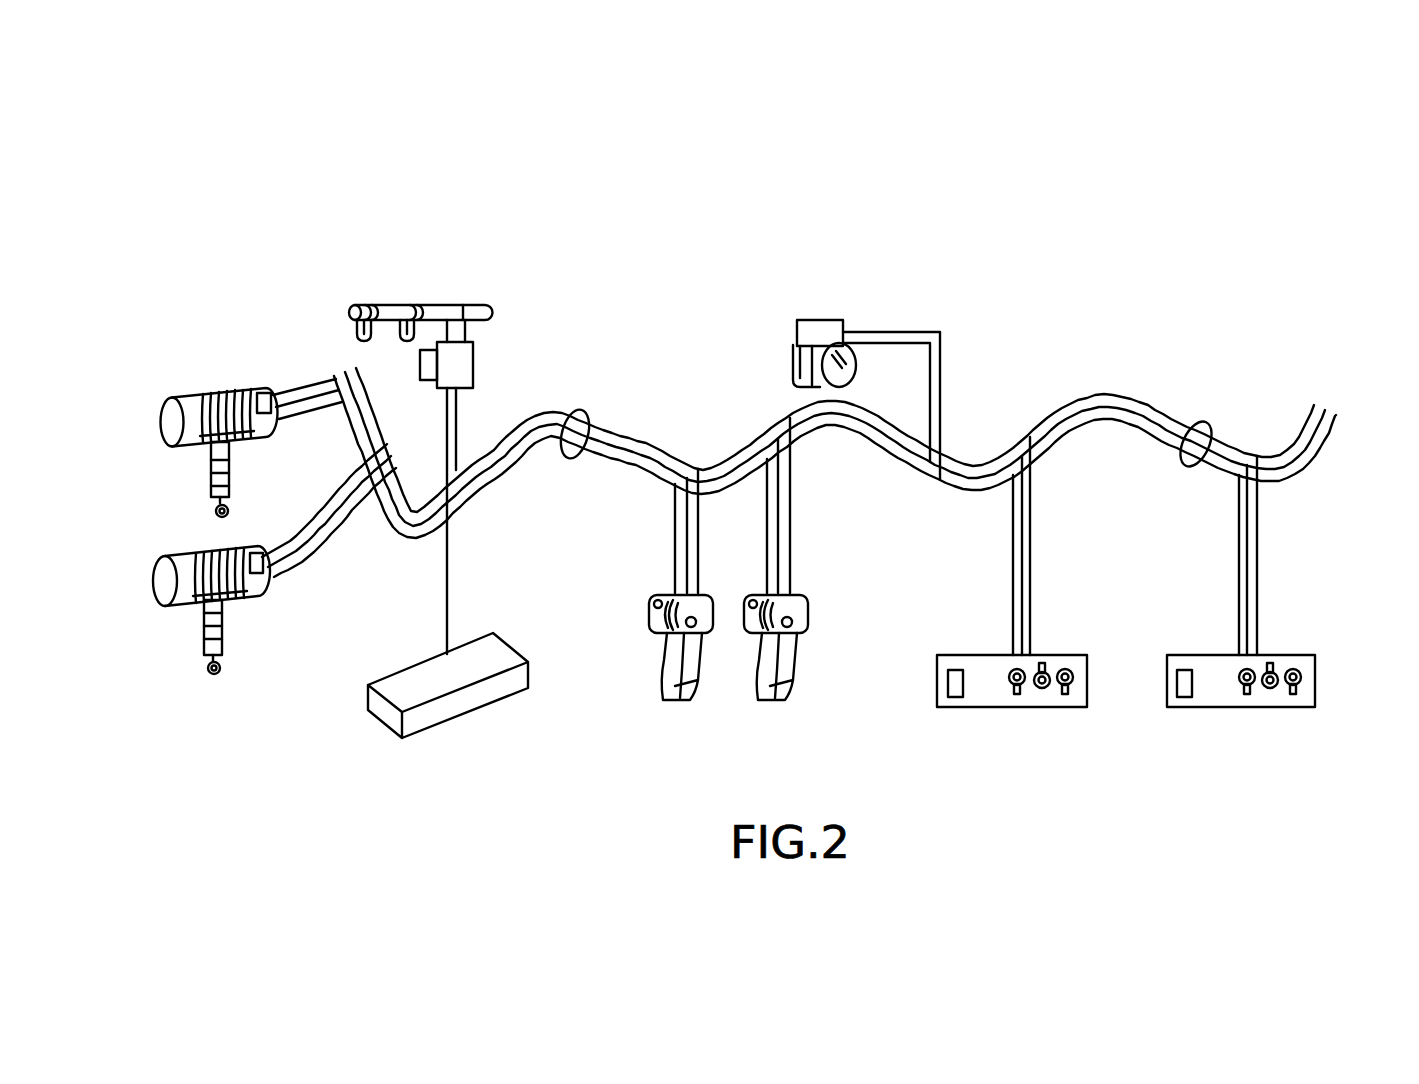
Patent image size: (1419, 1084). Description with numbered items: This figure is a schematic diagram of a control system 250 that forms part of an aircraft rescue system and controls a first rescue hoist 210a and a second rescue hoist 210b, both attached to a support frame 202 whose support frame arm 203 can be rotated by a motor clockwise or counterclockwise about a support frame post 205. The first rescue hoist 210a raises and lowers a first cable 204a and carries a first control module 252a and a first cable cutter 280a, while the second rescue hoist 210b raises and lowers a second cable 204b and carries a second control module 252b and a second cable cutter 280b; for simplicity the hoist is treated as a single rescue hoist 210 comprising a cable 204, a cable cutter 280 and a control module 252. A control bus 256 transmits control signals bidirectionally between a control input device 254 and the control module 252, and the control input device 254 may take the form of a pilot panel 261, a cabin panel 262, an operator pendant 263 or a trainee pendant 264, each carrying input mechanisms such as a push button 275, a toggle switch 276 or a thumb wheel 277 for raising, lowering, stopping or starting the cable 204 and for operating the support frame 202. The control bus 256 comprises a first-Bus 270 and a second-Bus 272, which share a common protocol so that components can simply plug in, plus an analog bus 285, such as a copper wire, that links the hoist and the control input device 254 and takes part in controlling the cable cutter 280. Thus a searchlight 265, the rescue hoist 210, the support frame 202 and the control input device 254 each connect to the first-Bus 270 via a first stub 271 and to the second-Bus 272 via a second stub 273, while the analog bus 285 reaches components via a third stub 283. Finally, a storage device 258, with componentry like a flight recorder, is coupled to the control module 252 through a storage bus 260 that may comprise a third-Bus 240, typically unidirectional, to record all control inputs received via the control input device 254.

The support frame 202 is at (463, 284).
The support frame arm 203 is at (386, 306).
The cable 204 is at (210, 396).
The first cable 204a is at (230, 394).
The second cable 204b is at (200, 550).
The support frame post 205 is at (463, 328).
The rescue hoist 210 is at (204, 507).
The first rescue hoist 210a is at (145, 382).
The second rescue hoist 210b is at (140, 598).
The third-Bus 240 is at (380, 548).
The control system 250 is at (704, 226).
The control module 252 is at (263, 392).
The first control module 252a is at (265, 393).
The second control module 252b is at (257, 553).
The control input device 254 is at (618, 607).
The control bus 256 is at (580, 408).
The storage device 258 is at (382, 712).
The storage bus 260 is at (368, 541).
The pilot panel 261 is at (1318, 688).
The cabin panel 262 is at (1087, 690).
The operator pendant 263 is at (668, 662).
The trainee pendant 264 is at (795, 658).
The searchlight 265 is at (803, 318).
The first-Bus 270 is at (609, 470).
The first stub 271 is at (295, 415).
The second-Bus 272 is at (637, 452).
The second stub 273 is at (294, 392).
The push button 275 is at (745, 603).
The toggle switch 276 is at (1248, 694).
The thumb wheel 277 is at (648, 622).
The cable cutter 280 is at (207, 443).
The first cable cutter 280a is at (224, 447).
The second cable cutter 280b is at (208, 606).
The third stub 283 is at (339, 370).
The analog bus 285 is at (720, 466).